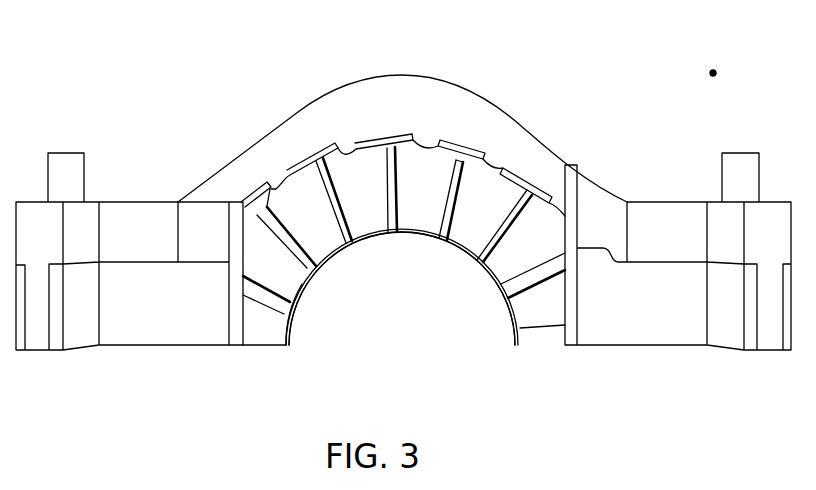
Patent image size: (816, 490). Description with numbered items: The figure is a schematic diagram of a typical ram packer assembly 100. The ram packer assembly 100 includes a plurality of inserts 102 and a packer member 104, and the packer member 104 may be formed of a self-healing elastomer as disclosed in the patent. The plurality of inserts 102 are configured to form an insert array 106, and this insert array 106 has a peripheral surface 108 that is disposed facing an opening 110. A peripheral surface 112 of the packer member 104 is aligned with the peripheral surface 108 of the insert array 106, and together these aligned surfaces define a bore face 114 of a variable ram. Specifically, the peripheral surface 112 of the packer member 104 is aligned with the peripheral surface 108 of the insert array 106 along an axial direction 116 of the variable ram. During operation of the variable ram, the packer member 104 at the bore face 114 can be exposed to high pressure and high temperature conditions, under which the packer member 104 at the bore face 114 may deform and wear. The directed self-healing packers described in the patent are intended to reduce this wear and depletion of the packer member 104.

The ram packer assembly 100 is at (165, 56).
The inserts 102 is at (363, 197).
The packer member 104 is at (342, 273).
The insert array 106 is at (480, 218).
The peripheral surface of the insert array 108 is at (313, 285).
The opening 110 is at (422, 336).
The peripheral surface of the packer member 112 is at (288, 329).
The bore face 114 is at (415, 250).
The axial direction 116 is at (714, 70).